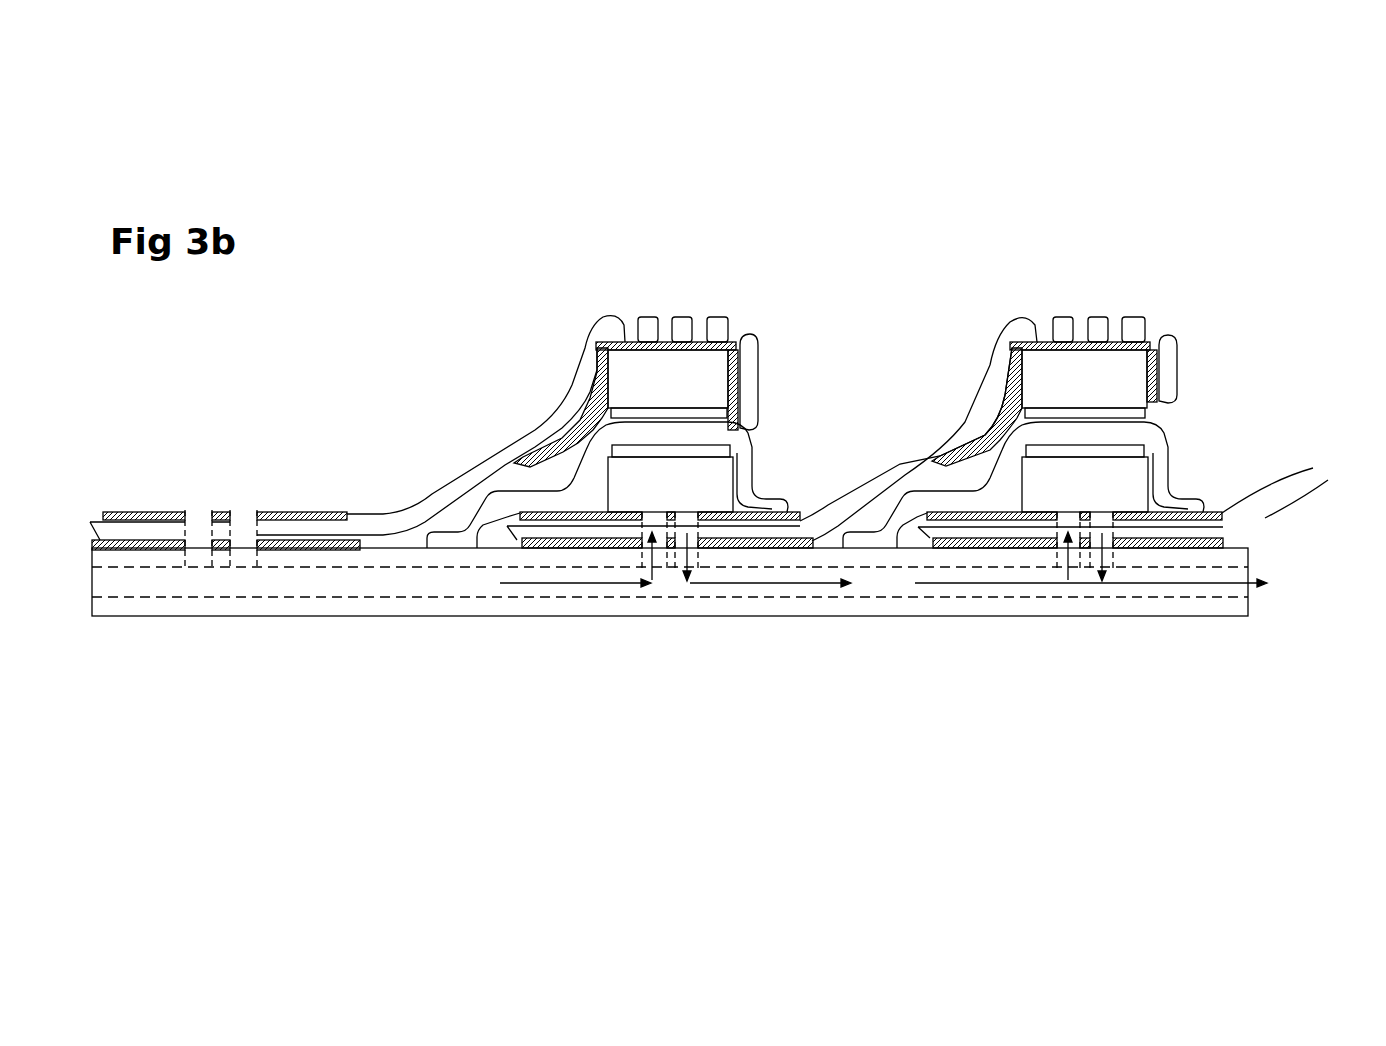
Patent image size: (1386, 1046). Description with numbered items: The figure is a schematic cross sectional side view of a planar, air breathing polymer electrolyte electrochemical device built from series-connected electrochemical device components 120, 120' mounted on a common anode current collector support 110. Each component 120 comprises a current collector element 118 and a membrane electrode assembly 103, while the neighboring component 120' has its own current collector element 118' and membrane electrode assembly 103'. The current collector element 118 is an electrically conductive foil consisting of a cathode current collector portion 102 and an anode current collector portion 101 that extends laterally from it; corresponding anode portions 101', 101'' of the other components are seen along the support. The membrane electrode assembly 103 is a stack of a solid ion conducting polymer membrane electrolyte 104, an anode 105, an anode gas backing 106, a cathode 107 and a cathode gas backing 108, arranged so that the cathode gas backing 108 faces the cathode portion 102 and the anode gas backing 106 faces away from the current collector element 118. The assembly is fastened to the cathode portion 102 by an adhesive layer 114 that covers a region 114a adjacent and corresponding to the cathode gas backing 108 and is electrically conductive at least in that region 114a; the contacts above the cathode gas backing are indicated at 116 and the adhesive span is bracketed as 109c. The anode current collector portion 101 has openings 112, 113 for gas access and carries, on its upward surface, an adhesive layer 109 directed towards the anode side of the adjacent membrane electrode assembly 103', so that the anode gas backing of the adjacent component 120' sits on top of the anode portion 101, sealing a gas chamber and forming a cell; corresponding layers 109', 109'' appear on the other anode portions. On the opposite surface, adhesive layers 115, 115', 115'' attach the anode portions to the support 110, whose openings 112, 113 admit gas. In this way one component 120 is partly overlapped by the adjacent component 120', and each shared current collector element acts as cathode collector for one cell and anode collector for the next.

The anode current collector portion 101 is at (653, 614).
The anode current collector portion 101' is at (160, 614).
The anode current collector portion 101'' is at (1070, 617).
The cathode current collector portion 102 is at (1012, 332).
The membrane electrode assembly 103 is at (1109, 399).
The membrane electrode assembly 103' is at (657, 432).
The polymer membrane electrolyte 104 is at (1127, 432).
The anode 105 is at (1127, 452).
The anode gas backing 106 is at (1144, 481).
The cathode 107 is at (1117, 413).
The cathode gas backing 108 is at (1097, 383).
The adhesive layer 109 is at (699, 607).
The adhesive layer 109' is at (225, 462).
The adhesive layer 109'' is at (1153, 532).
The conductive layer region 109c is at (778, 232).
The anode current collector support 110 is at (1240, 602).
The opening 112 is at (662, 557).
The opening 113 is at (687, 533).
The adhesive layer 114 is at (1152, 343).
The region 114a is at (1142, 242).
The adhesive layer 115 is at (649, 622).
The adhesive layer 115' is at (226, 623).
The adhesive layer 115'' is at (1159, 563).
The solder bumps 116 is at (1117, 323).
The current collector element 118 is at (911, 440).
The current collector element 118' is at (441, 425).
The electrochemical device component 120 is at (1282, 216).
The electrochemical device component 120' is at (827, 242).